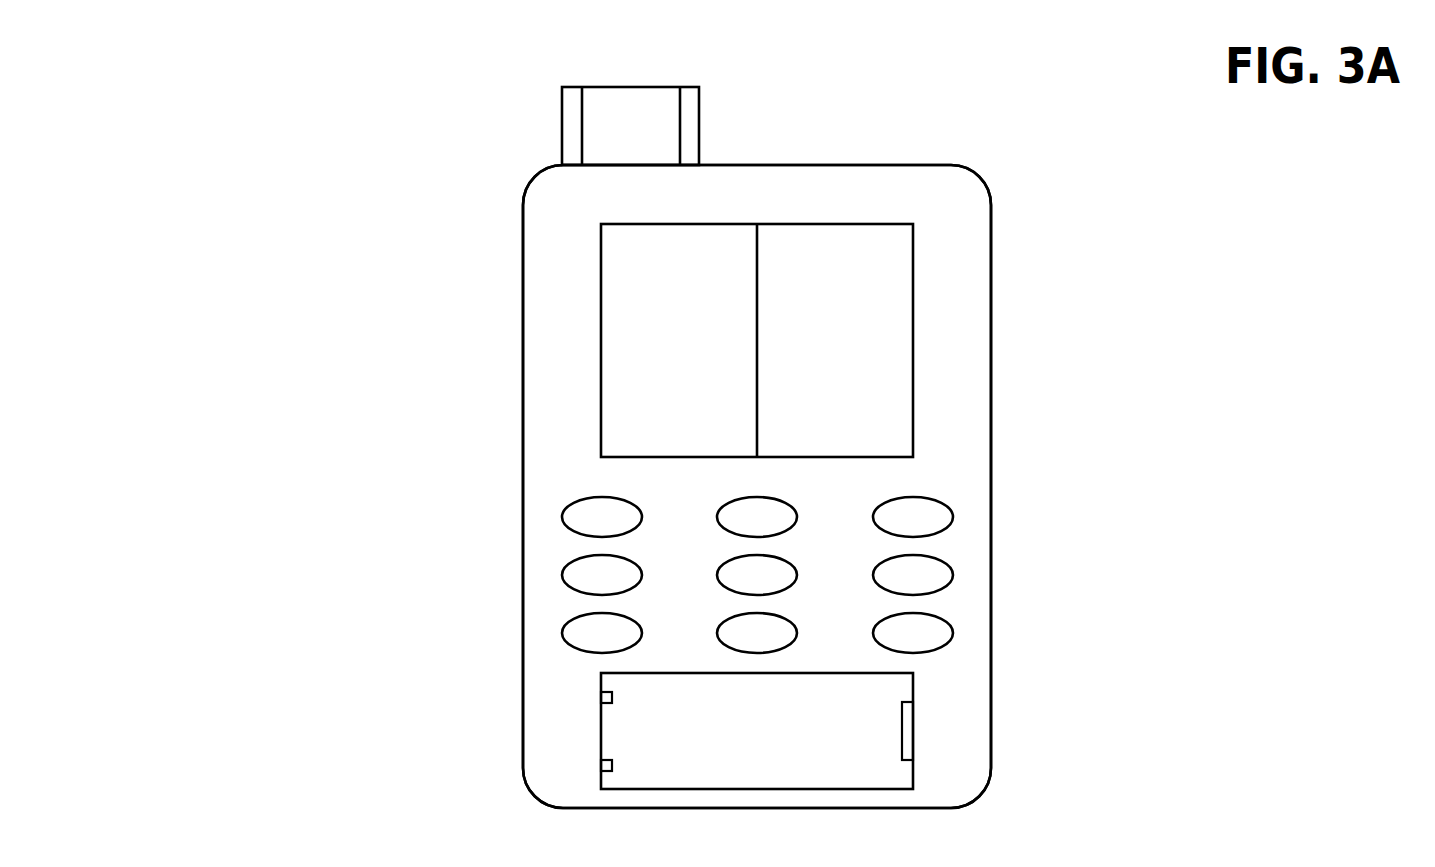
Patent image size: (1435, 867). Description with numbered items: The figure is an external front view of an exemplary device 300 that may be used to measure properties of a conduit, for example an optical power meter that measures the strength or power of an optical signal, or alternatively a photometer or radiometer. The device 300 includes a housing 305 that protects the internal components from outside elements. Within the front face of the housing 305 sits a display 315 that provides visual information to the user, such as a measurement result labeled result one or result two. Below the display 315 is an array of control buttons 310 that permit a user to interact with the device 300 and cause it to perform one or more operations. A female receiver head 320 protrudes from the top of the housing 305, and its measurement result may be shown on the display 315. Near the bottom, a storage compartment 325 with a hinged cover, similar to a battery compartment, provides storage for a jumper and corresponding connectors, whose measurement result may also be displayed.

The device 300 is at (265, 83).
The housing 305 is at (523, 494).
The control buttons 310 is at (970, 495).
The display 315 is at (913, 339).
The female receiver head 320 is at (562, 124).
The storage compartment 325 is at (627, 731).